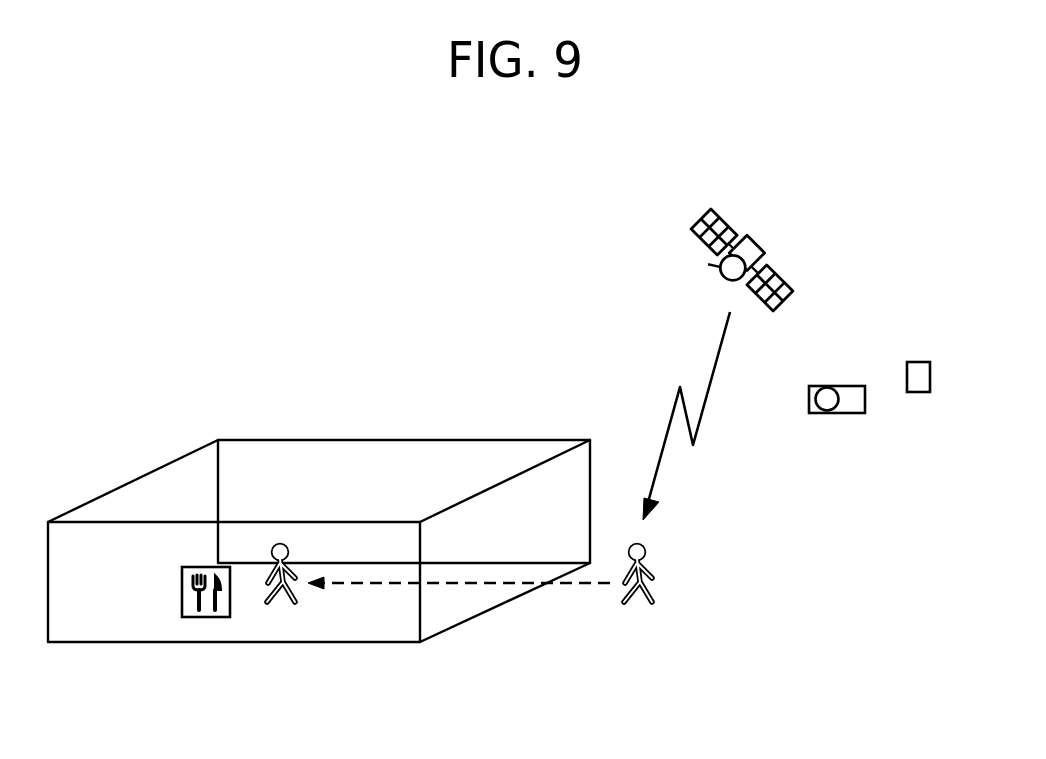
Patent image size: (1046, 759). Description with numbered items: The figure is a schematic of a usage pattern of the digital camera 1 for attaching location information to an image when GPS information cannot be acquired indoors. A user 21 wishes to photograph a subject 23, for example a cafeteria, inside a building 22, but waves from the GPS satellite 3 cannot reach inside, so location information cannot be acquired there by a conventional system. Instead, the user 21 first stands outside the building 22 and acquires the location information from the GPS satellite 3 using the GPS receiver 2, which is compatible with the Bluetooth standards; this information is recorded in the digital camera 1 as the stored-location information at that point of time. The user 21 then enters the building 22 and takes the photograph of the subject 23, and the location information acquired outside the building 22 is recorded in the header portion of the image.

The digital camera 1 is at (850, 386).
The GPS receiver 2 is at (918, 362).
The GPS satellite 3 is at (722, 216).
The user 21 is at (291, 551).
The building 22 is at (476, 440).
The subject 23 is at (212, 619).